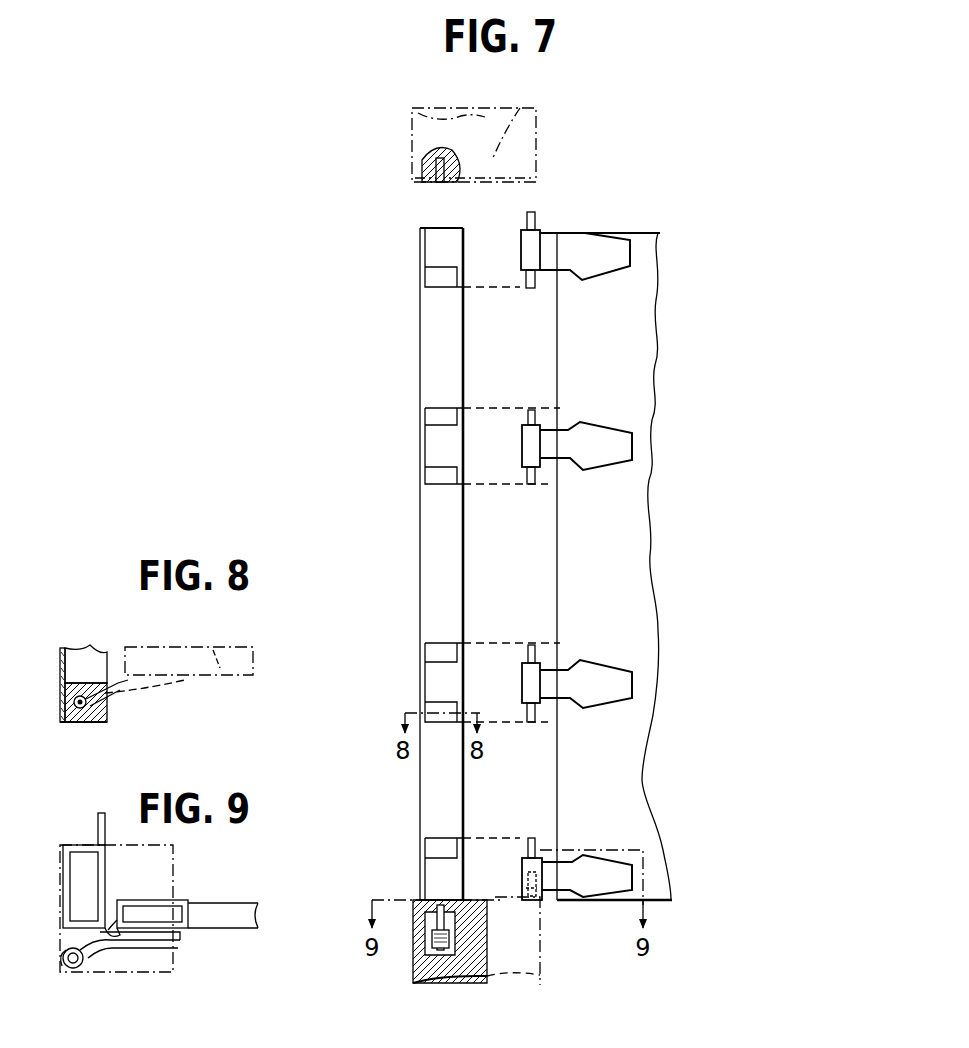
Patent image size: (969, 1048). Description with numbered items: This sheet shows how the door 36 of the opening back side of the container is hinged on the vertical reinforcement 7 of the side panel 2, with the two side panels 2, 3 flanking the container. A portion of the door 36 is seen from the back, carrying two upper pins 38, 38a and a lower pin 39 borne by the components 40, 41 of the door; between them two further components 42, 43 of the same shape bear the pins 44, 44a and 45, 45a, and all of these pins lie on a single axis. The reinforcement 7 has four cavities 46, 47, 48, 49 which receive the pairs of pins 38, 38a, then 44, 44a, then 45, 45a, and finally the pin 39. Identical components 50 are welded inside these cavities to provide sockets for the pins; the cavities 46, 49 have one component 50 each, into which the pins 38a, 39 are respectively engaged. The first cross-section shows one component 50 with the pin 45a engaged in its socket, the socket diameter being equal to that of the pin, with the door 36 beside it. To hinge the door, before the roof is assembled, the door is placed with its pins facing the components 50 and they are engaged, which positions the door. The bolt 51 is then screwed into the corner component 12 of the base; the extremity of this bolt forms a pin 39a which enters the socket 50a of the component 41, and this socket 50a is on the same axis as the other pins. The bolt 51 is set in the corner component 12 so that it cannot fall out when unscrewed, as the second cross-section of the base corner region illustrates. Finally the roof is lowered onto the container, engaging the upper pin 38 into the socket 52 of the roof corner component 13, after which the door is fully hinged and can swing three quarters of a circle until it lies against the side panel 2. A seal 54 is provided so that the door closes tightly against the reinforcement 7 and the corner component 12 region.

In FIG. 9, the side panel 2 is at (98, 822).
In FIG. 7, the side panel 3 is at (417, 392).
In FIG. 7, the vertical reinforcement 7 is at (436, 350).
In FIG. 9, the vertical reinforcement 7 is at (63, 876).
In FIG. 7, the corner component 12 is at (425, 940).
In FIG. 9, the corner component 12 is at (146, 900).
In FIG. 7, the corner component 13 is at (455, 163).
In FIG. 7, the door 36 is at (606, 566).
In FIG. 8, the door 36 is at (189, 643).
In FIG. 9, the door 36 is at (210, 913).
In FIG. 7, the upper pin 38 is at (526, 218).
In FIG. 7, the upper pin 38a is at (527, 288).
In FIG. 7, the lower pin 39 is at (534, 838).
In FIG. 7, the pin 39a is at (450, 905).
In FIG. 7, the component 40 is at (543, 248).
In FIG. 7, the component 41 is at (530, 868).
In FIG. 9, the component 41 is at (72, 968).
In FIG. 7, the component 42 is at (526, 440).
In FIG. 7, the component 43 is at (528, 680).
In FIG. 7, the pin 44 is at (535, 420).
In FIG. 7, the pin 44a is at (526, 481).
In FIG. 7, the pin 45 is at (535, 660).
In FIG. 7, the pin 45a is at (532, 716).
In FIG. 8, the pin 45a is at (100, 697).
In FIG. 7, the cavity 46 is at (457, 253).
In FIG. 7, the cavity 47 is at (441, 432).
In FIG. 7, the cavity 48 is at (453, 677).
In FIG. 8, the cavity 48 is at (85, 676).
In FIG. 7, the cavity 49 is at (457, 830).
In FIG. 7, the component 50 is at (433, 272).
In FIG. 8, the component 50 is at (90, 718).
In FIG. 7, the socket 50a is at (547, 880).
In FIG. 9, the socket 50a is at (80, 966).
In FIG. 7, the bolt 51 is at (447, 934).
In FIG. 7, the socket 52 is at (418, 160).
In FIG. 9, the seal 54 is at (115, 943).